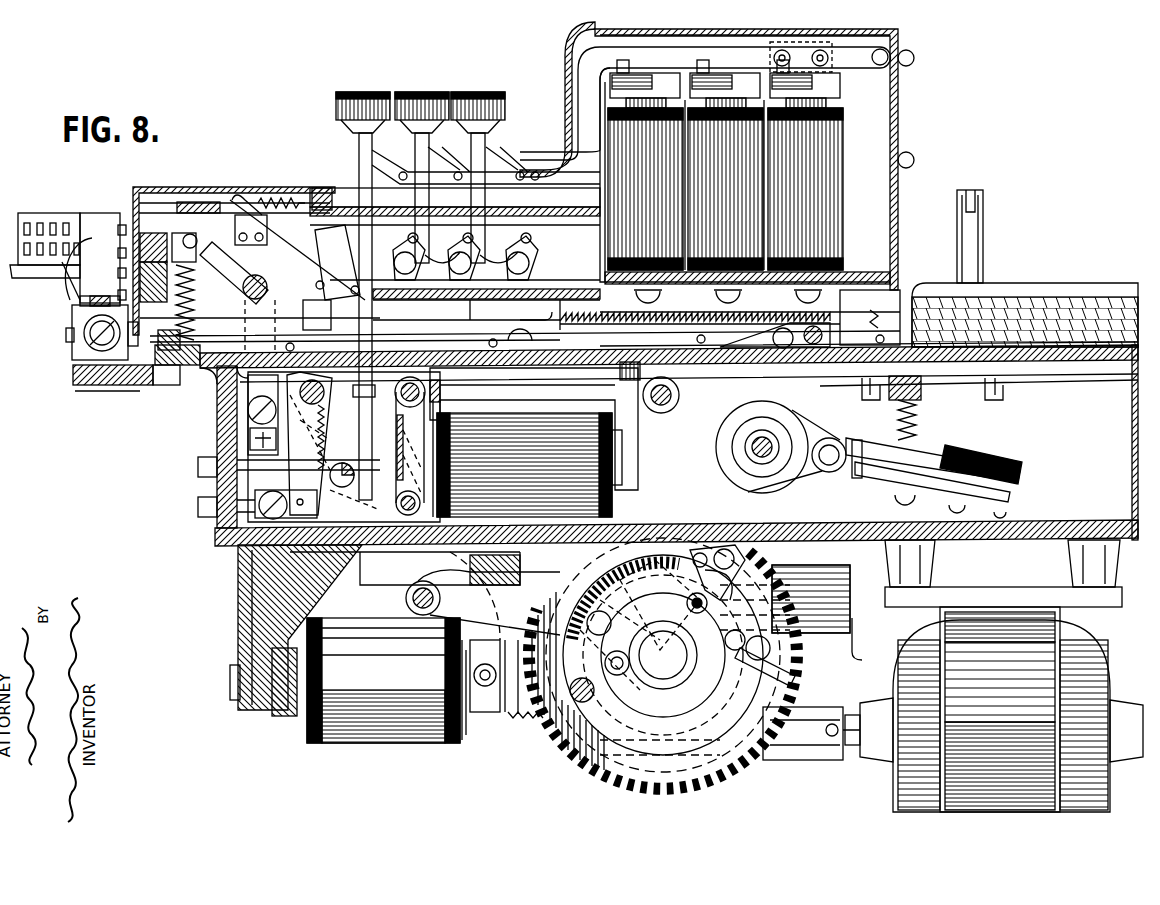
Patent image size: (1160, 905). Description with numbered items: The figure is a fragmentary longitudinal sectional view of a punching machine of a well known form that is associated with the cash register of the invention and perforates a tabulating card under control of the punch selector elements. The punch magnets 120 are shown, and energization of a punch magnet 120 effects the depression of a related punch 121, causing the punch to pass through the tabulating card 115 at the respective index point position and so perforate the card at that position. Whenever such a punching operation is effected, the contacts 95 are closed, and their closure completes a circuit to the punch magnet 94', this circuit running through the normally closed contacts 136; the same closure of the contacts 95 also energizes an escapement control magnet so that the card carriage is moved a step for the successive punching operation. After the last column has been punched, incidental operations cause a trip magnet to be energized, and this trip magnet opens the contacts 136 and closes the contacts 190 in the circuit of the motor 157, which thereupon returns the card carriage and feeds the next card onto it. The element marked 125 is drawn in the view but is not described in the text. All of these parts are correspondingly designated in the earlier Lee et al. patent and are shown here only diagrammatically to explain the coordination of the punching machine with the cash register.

The punch magnet 120 is at (836, 160).
The punch 121 is at (135, 386).
The tabulating card 115 is at (212, 372).
The contacts 95 is at (357, 400).
The punch magnet 94' is at (544, 442).
The contacts 136 is at (716, 552).
The contacts 190 is at (663, 655).
The motor 157 is at (928, 677).
The coil 125 is at (357, 738).